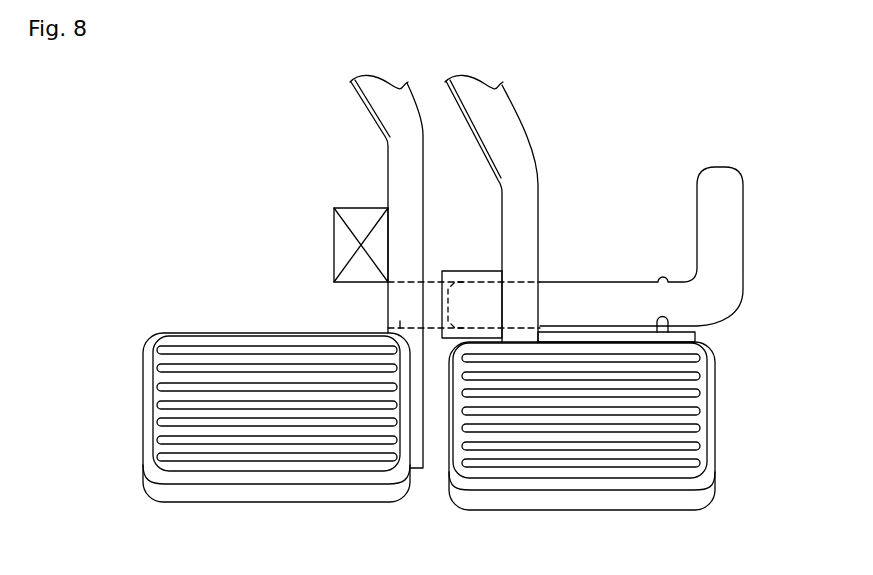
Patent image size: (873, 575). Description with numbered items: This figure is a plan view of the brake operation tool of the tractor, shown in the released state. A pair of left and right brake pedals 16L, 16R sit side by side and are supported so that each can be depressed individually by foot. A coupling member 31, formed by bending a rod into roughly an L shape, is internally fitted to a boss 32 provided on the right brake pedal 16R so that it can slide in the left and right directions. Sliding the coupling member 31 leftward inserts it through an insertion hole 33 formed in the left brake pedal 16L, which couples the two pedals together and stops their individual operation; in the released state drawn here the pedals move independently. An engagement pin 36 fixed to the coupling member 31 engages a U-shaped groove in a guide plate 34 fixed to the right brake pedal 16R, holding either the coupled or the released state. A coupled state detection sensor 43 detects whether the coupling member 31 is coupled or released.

The left brake pedal 16L is at (224, 332).
The right brake pedal 16R is at (712, 443).
The coupling member 31 is at (572, 290).
The boss 32 is at (486, 271).
The insertion hole 33 is at (400, 328).
The guide plate 34 is at (690, 338).
The engagement pin 36 is at (672, 323).
The coupled state detection sensor 43 is at (333, 224).